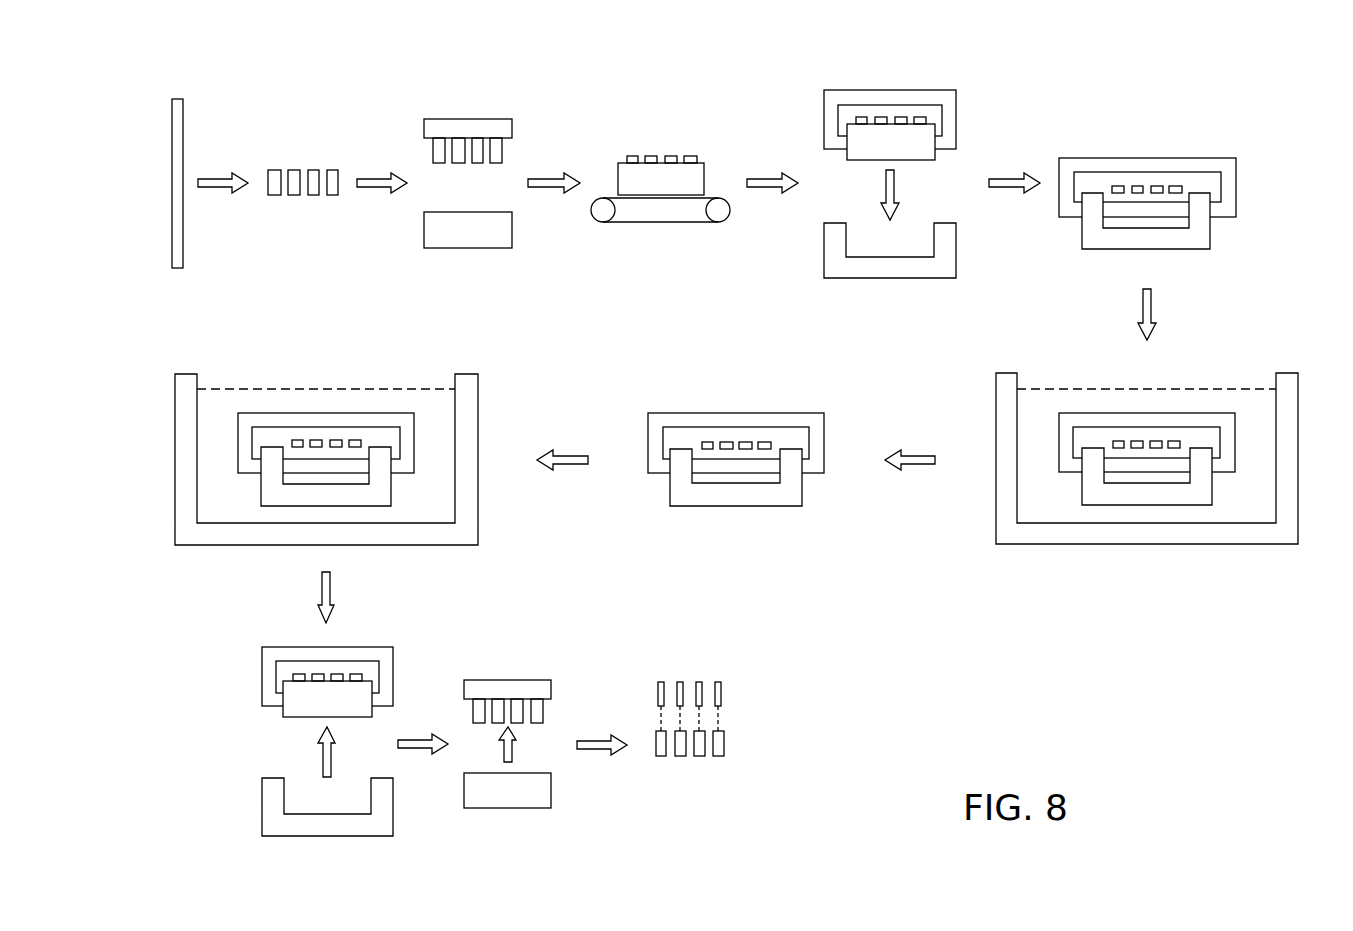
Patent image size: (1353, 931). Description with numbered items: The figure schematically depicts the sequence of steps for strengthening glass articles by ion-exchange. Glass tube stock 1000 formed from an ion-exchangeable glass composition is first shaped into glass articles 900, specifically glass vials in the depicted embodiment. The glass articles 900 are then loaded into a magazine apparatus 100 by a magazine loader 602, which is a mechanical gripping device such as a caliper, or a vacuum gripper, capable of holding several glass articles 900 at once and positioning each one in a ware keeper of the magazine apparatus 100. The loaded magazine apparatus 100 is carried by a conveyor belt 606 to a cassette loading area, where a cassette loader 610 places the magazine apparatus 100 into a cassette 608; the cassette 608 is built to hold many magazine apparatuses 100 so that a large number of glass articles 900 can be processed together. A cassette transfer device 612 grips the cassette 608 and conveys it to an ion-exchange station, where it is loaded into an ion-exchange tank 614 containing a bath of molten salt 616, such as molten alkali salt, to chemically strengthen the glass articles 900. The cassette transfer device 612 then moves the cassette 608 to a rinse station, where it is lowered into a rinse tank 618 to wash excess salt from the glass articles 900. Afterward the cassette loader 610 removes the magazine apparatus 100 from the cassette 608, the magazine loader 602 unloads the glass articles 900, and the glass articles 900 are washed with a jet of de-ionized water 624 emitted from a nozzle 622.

The glass tube stock 1000 is at (179, 99).
The glass articles 900 is at (294, 170).
The magazine loader 602 is at (460, 118).
The magazine apparatus 100 is at (473, 248).
The conveyor belt 606 is at (663, 222).
The cassette loader 610 is at (920, 90).
The cassette 608 is at (890, 278).
The cassette transfer device 612 is at (1200, 158).
The ion-exchange tank 614 is at (996, 392).
The bath of molten salt 616 is at (1050, 389).
The rinse tank 618 is at (175, 392).
The nozzle 622 is at (720, 682).
The jet of de-ionized water 624 is at (722, 717).